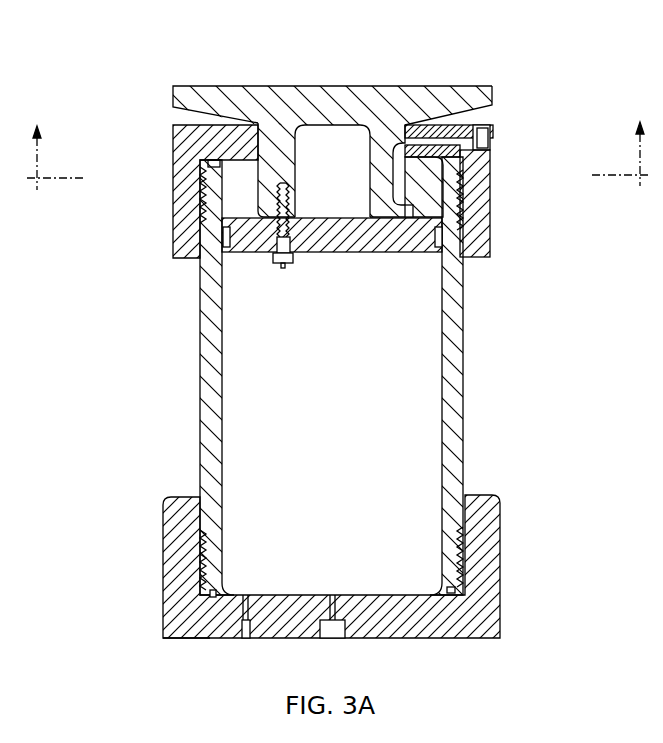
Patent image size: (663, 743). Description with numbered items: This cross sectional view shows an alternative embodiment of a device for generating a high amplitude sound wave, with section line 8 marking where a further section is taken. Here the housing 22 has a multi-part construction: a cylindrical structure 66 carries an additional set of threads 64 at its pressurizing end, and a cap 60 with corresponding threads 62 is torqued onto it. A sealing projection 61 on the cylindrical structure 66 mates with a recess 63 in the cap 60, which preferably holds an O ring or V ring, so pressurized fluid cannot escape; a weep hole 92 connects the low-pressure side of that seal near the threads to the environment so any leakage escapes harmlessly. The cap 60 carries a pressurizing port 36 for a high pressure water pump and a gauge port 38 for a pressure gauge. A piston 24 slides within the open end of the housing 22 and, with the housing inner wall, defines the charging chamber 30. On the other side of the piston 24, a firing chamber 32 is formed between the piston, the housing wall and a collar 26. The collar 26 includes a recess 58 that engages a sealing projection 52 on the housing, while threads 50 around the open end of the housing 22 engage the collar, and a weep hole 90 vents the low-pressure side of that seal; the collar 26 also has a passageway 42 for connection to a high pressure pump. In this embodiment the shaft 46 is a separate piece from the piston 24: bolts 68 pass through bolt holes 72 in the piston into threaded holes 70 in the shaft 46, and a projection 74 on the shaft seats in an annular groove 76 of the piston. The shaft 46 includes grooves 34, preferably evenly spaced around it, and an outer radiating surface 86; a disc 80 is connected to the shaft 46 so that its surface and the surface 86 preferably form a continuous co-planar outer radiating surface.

The section line 8- 8 is at (338, 144).
The housing 22 is at (176, 418).
The piston 24 is at (346, 253).
The collar 26 is at (492, 206).
The charging chamber 30 is at (255, 377).
The firing chamber 32 is at (232, 188).
The grooves 34 is at (400, 127).
The pressurizing port 36 is at (336, 640).
The gauge port 38 is at (250, 640).
The passageway 42 is at (490, 148).
The shaft 46 is at (383, 123).
The threads 50 is at (214, 228).
The sealing projection 52 is at (472, 122).
The recess 58 is at (222, 170).
The cap 60 is at (525, 609).
The sealing projection 61 is at (214, 590).
The threads 62 is at (446, 543).
The recess 63 is at (210, 640).
The threads 64 is at (460, 562).
The cylindrical structure 66 is at (462, 403).
The bolts 68 is at (283, 269).
The threaded holes 70 is at (294, 192).
The bolt holes 72 is at (307, 218).
The projection 74 is at (462, 178).
The annular groove 76 is at (404, 142).
The disc 80 is at (219, 88).
The outer radiating surface 86 is at (462, 87).
The weep hole 90 is at (173, 200).
The weep hole 92 is at (215, 592).